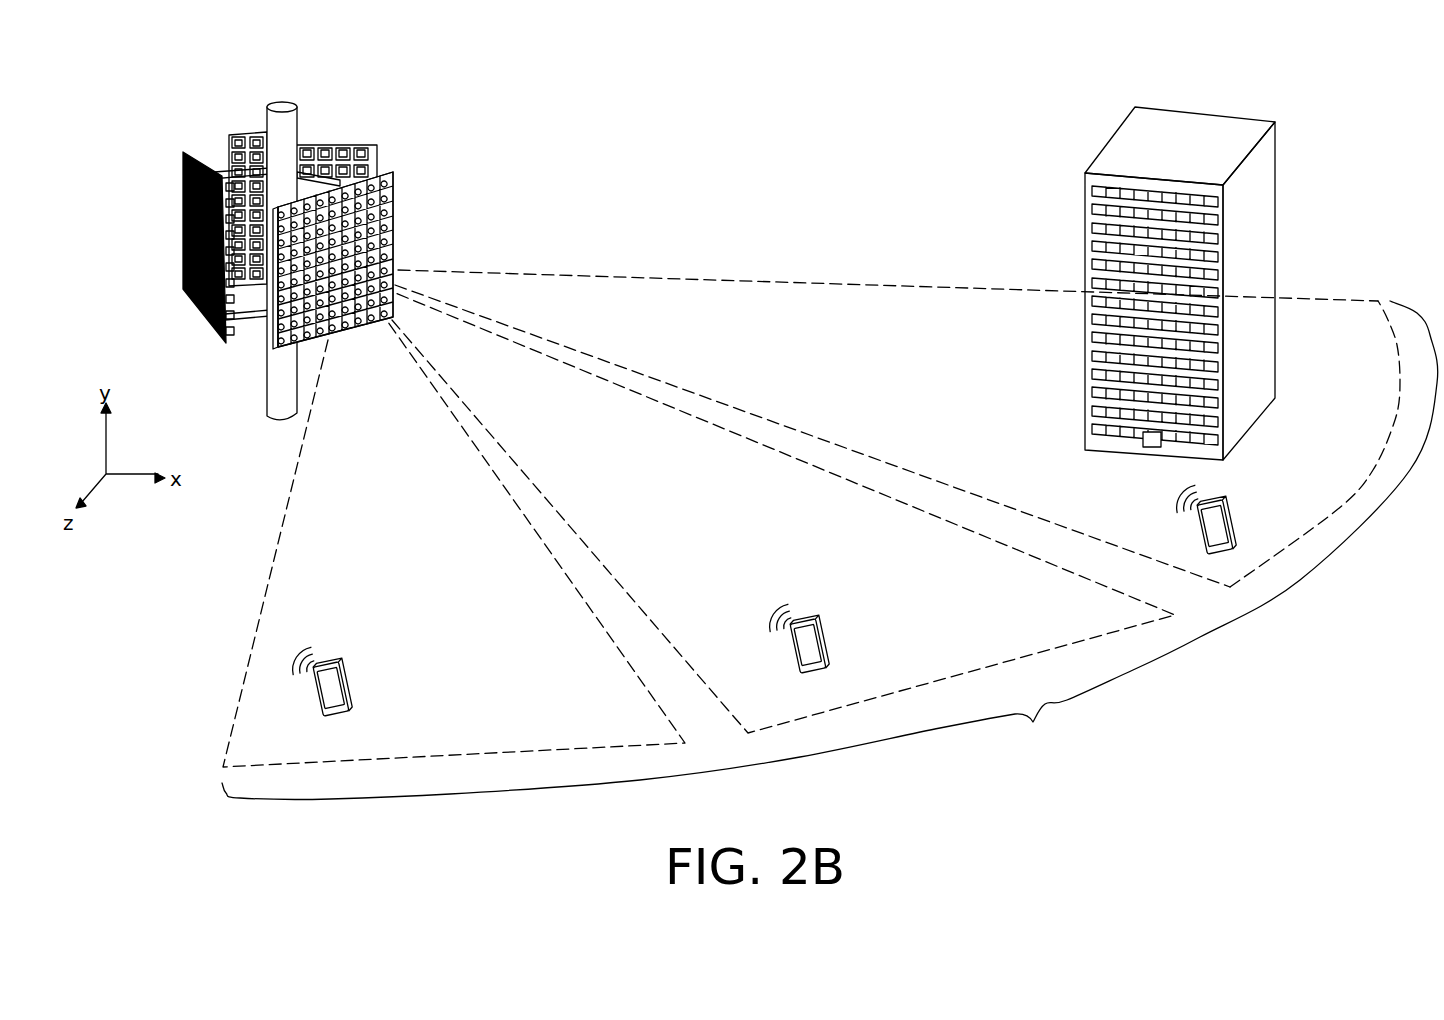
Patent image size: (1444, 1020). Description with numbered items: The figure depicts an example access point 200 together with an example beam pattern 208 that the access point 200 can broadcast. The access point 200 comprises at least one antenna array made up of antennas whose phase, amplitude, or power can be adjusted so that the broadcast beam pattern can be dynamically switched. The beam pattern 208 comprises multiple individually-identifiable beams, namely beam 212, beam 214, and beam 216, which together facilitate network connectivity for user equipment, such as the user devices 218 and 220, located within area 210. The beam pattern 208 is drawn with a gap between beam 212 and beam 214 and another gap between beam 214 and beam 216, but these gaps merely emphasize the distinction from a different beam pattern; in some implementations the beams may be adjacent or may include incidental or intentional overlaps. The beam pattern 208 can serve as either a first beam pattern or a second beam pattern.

The access point 200 is at (296, 91).
The beam pattern 208 is at (797, 477).
The area 210 is at (830, 550).
The beam 212 is at (262, 606).
The beam 214 is at (729, 711).
The beam 216 is at (788, 282).
The user device 218 is at (348, 683).
The user device 220 is at (1256, 237).